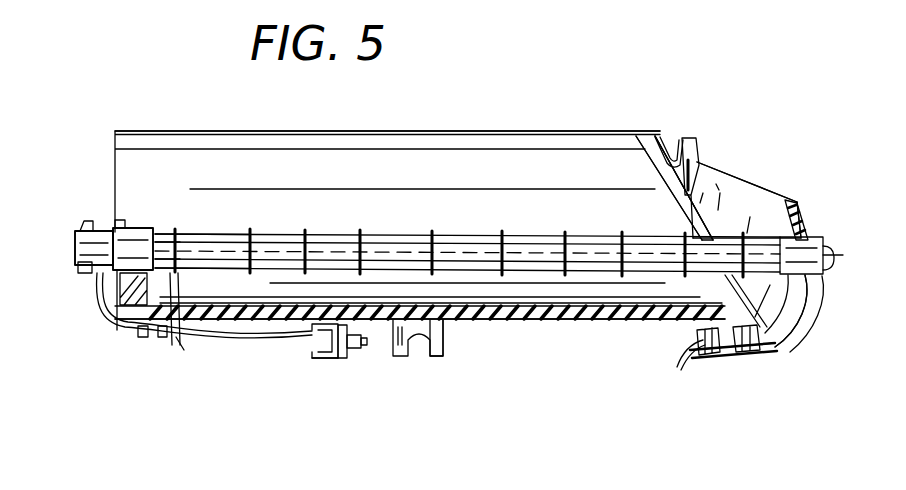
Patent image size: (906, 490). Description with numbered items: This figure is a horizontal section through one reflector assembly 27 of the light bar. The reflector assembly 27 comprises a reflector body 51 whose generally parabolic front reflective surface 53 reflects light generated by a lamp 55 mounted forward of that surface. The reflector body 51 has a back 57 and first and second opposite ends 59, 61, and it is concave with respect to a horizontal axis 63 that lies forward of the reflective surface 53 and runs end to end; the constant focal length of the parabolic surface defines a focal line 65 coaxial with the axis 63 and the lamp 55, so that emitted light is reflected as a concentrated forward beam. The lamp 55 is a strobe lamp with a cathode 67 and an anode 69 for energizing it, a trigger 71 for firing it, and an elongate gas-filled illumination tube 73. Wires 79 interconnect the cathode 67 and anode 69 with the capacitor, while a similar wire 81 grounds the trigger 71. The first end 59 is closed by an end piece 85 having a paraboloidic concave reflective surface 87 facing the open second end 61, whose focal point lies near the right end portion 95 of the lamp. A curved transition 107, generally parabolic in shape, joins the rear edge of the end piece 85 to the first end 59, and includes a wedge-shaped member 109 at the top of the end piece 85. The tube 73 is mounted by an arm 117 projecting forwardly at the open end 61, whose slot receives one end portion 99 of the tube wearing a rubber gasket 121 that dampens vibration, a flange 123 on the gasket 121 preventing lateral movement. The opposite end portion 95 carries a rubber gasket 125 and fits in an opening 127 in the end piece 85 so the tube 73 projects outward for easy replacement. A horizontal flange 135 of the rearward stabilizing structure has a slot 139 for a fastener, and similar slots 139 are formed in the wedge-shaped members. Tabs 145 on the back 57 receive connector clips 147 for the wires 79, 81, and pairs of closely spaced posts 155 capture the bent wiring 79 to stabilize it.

The reflector assembly 27 is at (205, 405).
The reflector body 51 is at (592, 321).
The front reflective surface 53 is at (464, 156).
The lamp 55 is at (468, 234).
The back 57 is at (537, 327).
The first end 59 is at (668, 197).
The second end 61 is at (117, 171).
The horizontal axis 63 is at (75, 247).
The focal line 65 is at (114, 249).
The cathode 67 is at (82, 274).
The anode 69 is at (830, 262).
The trigger 71 is at (178, 230).
The illumination tube 73 is at (347, 233).
The wires 79 is at (252, 342).
The wire 81 is at (180, 288).
The end piece 85 is at (713, 182).
The concave reflective surface 87 is at (713, 190).
The right end portion 95 is at (757, 240).
The end portion 99 is at (172, 232).
The curved transition 107 is at (698, 229).
The wedge-shaped member 109 is at (700, 157).
The arm 117 is at (112, 306).
The gasket 121 is at (96, 231).
The flange 123 is at (113, 228).
The rubber gasket 125 is at (800, 335).
The opening 127 is at (810, 240).
The horizontal flange 135 is at (443, 350).
The slot 139 is at (420, 357).
The tab 145 is at (342, 360).
The connector clip 147 is at (323, 360).
The posts 155 is at (148, 336).